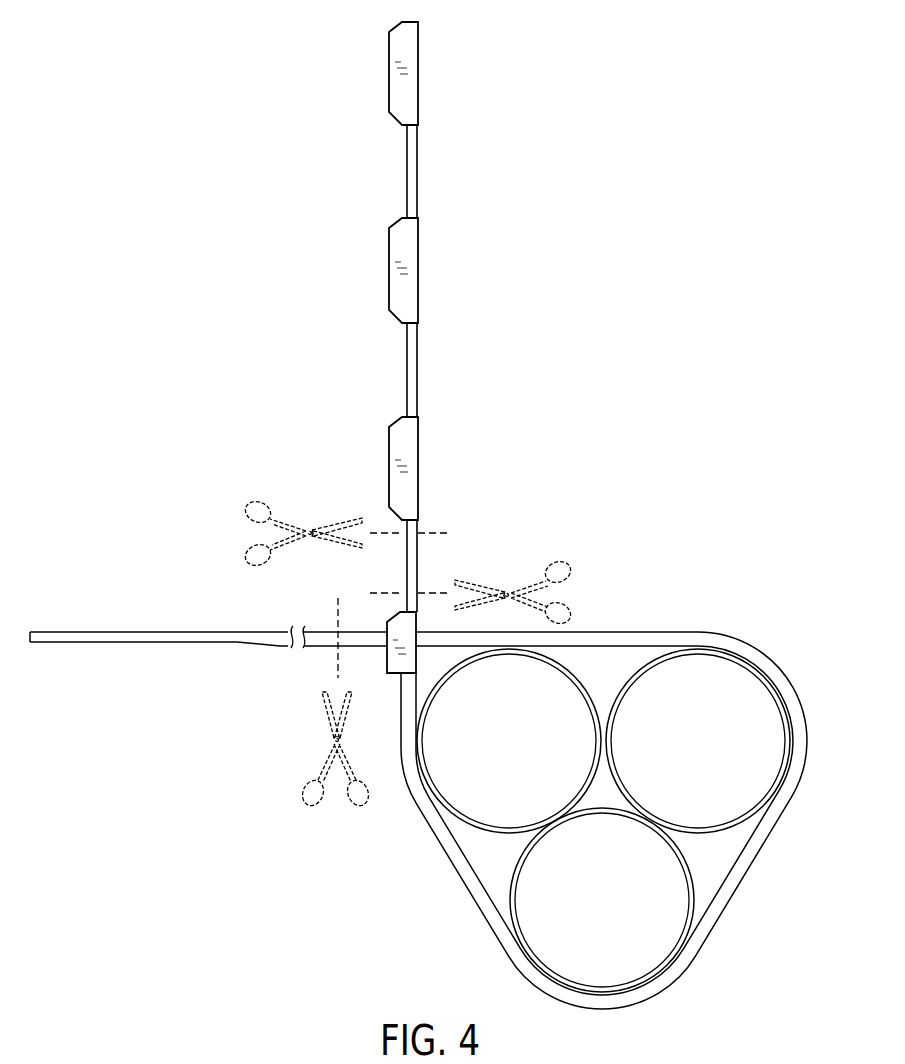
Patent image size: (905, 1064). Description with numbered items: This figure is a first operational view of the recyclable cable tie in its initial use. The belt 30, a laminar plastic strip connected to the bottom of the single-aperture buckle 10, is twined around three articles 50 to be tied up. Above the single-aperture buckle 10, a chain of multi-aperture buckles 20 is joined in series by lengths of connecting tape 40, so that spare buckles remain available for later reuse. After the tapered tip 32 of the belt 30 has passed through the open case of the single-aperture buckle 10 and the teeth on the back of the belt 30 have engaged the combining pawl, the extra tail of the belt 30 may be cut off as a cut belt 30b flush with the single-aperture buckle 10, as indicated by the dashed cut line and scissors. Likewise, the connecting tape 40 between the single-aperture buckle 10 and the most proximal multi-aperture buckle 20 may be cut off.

The single-aperture buckle 10 is at (374, 608).
The multi-aperture buckle 20 is at (440, 86).
The connecting tape 40 is at (412, 173).
The belt 30 is at (630, 638).
The cut belt 30b is at (320, 643).
The tapered tip 32 is at (130, 637).
The articles 50 is at (718, 654).